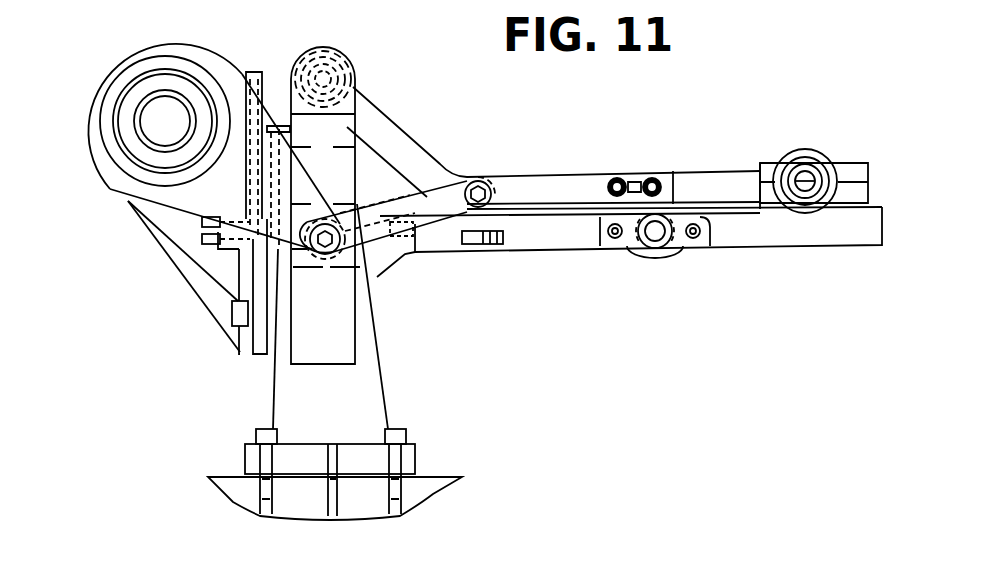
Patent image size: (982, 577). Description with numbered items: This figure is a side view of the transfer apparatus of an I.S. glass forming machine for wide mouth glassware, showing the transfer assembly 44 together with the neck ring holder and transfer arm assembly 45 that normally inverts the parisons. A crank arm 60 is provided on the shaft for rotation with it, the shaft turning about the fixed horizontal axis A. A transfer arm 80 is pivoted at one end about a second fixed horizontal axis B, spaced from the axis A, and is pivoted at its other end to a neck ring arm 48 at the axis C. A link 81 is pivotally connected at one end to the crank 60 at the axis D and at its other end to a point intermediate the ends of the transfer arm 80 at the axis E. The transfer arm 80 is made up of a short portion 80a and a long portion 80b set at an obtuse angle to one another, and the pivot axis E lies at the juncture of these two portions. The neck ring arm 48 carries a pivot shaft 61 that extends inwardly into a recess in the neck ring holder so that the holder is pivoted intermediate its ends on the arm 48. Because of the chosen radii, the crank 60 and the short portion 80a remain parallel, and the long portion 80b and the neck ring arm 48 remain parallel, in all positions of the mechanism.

The axis of shaft A is at (165, 122).
The second fixed horizontal axis B is at (323, 82).
The pivot axis C is at (805, 182).
The pivot axis D is at (327, 254).
The pivot axis E is at (479, 183).
The transfer assembly 44 is at (197, 325).
The neck ring holder and transfer arm assembly 45 is at (852, 250).
The neck ring arm 48 is at (572, 240).
The crank arm 60 is at (192, 190).
The pivot shaft 61 is at (655, 233).
The transfer arm 80 is at (560, 190).
The short portion 80a is at (372, 118).
The long portion 80b is at (692, 180).
The link 81 is at (433, 228).